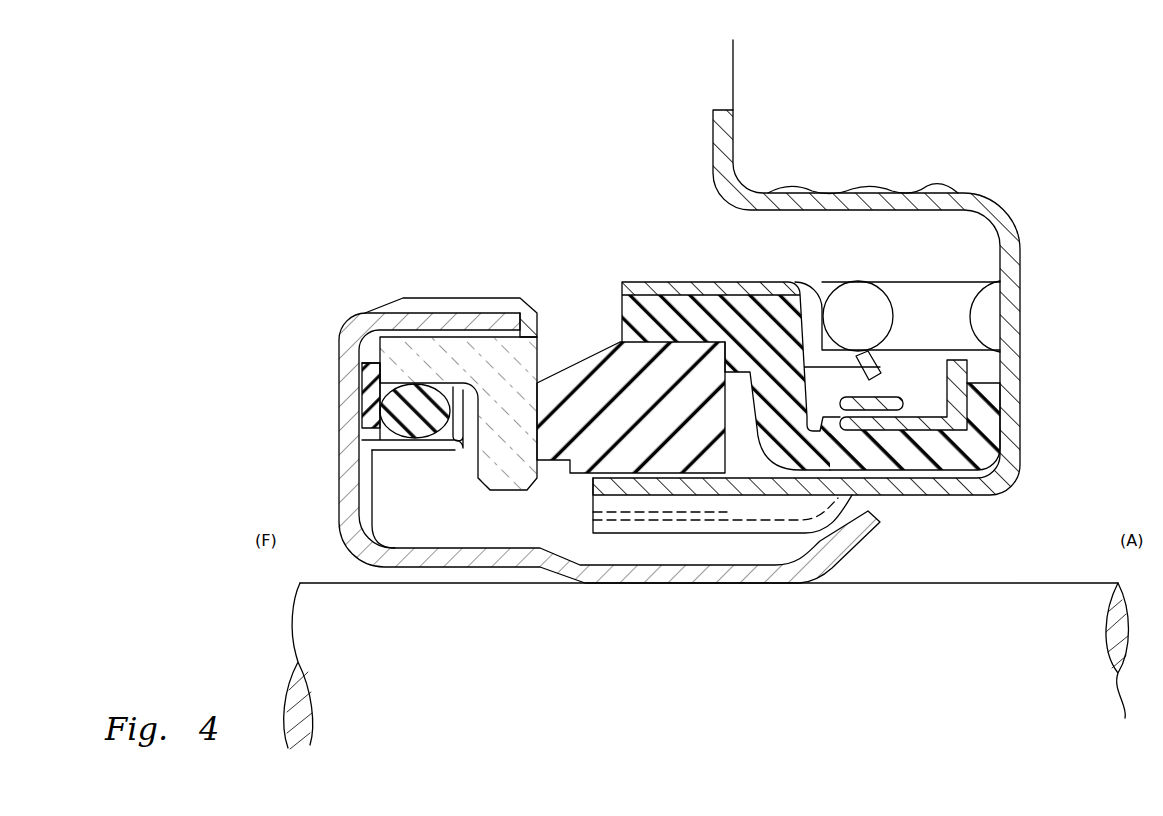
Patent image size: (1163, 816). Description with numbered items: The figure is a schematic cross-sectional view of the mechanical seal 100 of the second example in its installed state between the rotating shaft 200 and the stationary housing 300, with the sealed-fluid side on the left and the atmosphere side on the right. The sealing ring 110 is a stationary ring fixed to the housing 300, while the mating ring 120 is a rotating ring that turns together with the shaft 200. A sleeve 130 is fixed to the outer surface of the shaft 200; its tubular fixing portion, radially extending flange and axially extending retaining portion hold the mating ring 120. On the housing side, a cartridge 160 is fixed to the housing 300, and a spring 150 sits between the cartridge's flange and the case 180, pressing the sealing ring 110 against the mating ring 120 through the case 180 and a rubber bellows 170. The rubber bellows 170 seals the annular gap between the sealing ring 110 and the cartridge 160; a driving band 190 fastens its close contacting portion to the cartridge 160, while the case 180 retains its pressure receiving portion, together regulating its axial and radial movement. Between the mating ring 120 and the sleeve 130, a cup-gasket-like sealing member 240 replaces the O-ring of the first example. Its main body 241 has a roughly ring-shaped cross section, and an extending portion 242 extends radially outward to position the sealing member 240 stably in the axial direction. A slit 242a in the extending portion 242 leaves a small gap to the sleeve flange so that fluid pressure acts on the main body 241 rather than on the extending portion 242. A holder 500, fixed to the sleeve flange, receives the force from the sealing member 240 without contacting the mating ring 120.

The mechanical seal 100 is at (527, 194).
The sealing ring 110 is at (615, 342).
The mating ring 120 is at (490, 298).
The sleeve 130 is at (338, 387).
The spring 150 is at (878, 281).
The cartridge 160 is at (788, 194).
The rubber bellows 170 is at (953, 475).
The case 180 is at (678, 282).
The driving band 190 is at (916, 417).
The sealing member 240 is at (457, 450).
The main body 241 is at (421, 392).
The extending portion 242 is at (362, 408).
The slit 242a is at (362, 392).
The holder 500 is at (402, 453).
The shaft 200 is at (706, 666).
The housing 300 is at (845, 117).